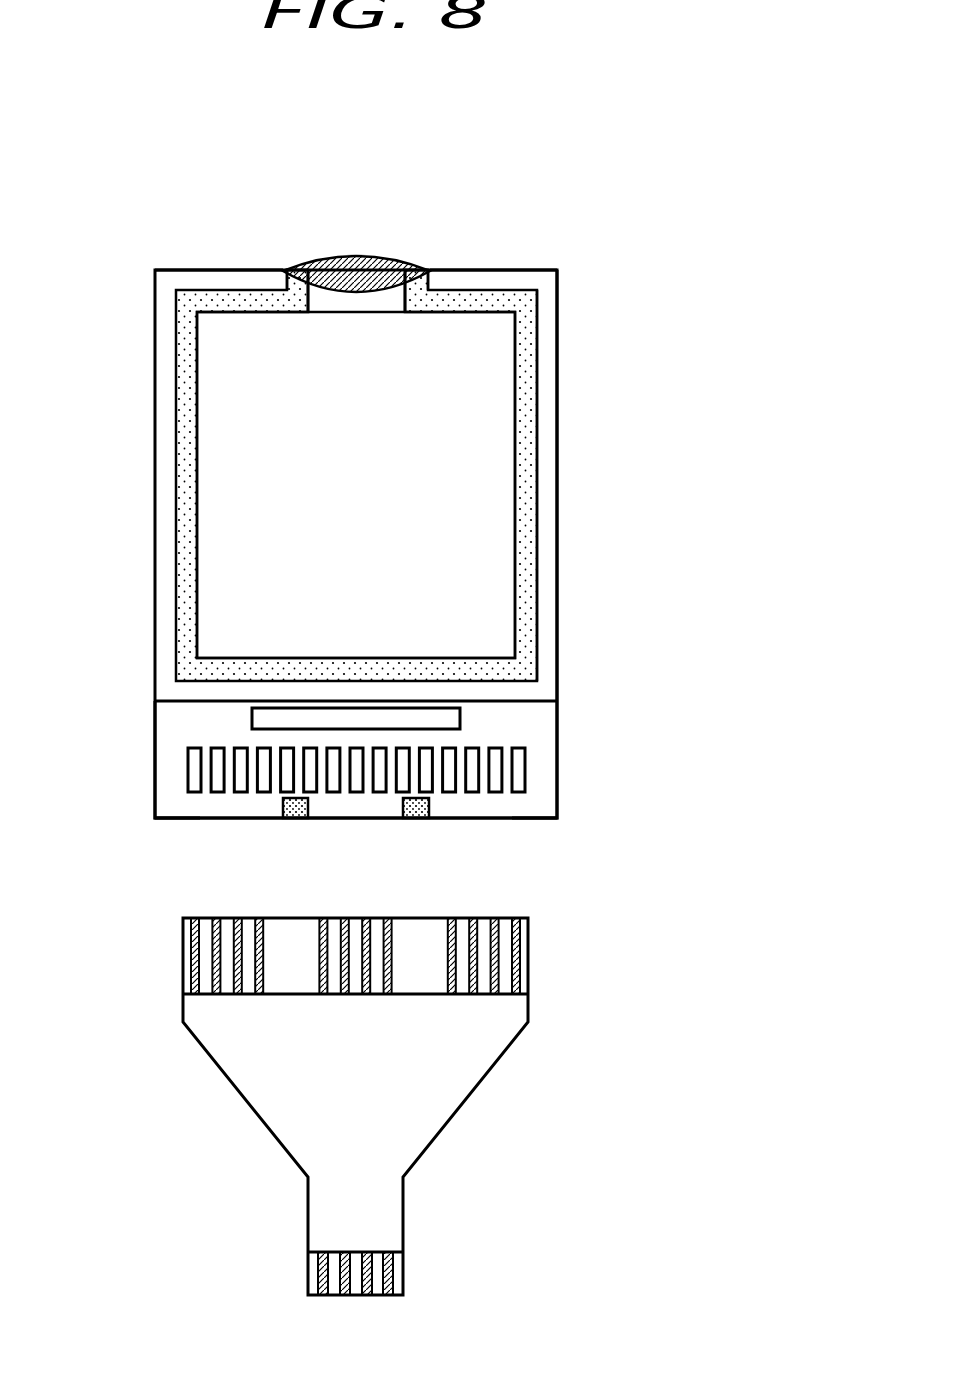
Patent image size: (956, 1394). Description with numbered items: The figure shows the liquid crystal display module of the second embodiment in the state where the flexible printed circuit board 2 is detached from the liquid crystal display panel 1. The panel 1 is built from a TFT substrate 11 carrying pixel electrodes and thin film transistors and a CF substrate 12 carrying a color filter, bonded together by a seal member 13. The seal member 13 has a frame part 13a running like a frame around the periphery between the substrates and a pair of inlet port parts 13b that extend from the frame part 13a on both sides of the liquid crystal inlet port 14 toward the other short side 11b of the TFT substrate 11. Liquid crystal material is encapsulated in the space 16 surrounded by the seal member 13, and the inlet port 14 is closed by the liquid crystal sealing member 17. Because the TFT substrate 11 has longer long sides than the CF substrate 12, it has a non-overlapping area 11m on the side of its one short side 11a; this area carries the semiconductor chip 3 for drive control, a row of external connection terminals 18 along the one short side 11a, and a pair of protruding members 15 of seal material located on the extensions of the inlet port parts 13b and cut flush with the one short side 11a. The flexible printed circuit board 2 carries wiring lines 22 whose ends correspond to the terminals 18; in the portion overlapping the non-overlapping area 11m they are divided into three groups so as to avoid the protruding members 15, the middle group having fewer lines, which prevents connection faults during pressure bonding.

The liquid crystal display panel 1 is at (557, 275).
The flexible printed circuit board 2 is at (488, 1076).
The semiconductor chip 3 is at (462, 720).
The TFT substrate 11 is at (537, 800).
The one short side 11a is at (535, 825).
The other short side 11b is at (172, 268).
The non-overlapping area 11m is at (100, 702).
The CF substrate 12 is at (553, 617).
The seal member 13 is at (527, 465).
The frame part 13a is at (537, 362).
The inlet port parts 13b is at (287, 285).
The liquid crystal inlet port 14 is at (342, 302).
The protruding members 15 is at (295, 820).
The space 16 is at (473, 545).
The liquid crystal sealing member 17 is at (365, 256).
The external connection terminals 18 is at (527, 770).
The wiring lines 22 is at (527, 963).